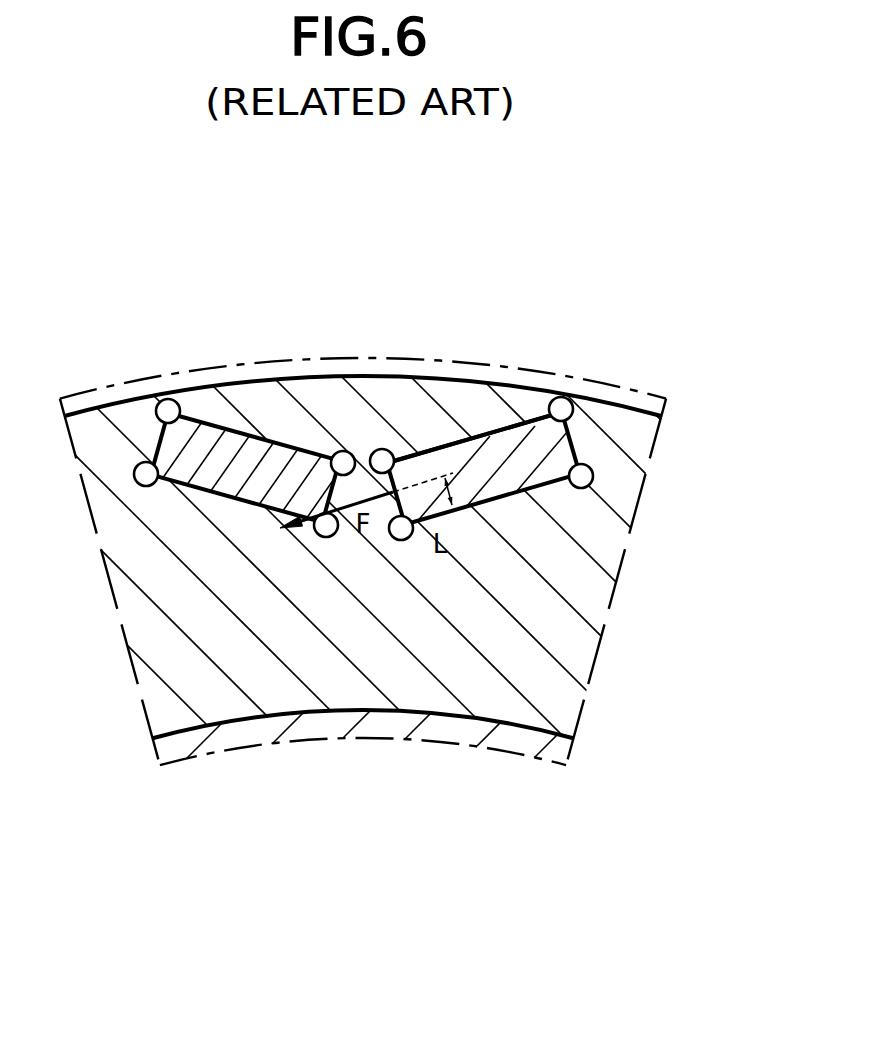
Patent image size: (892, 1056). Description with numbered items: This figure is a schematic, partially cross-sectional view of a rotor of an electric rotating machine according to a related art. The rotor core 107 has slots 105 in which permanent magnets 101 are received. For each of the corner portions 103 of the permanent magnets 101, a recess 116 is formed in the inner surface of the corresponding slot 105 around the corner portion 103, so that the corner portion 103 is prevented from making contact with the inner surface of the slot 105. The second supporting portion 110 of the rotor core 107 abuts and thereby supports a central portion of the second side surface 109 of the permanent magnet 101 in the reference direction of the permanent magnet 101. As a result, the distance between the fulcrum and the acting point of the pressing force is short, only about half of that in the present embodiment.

The permanent magnet 101 is at (447, 460).
The corner portion 103 is at (565, 398).
The slot 105 is at (505, 428).
The rotor core 107 is at (552, 700).
The second side surface 109 is at (360, 467).
The second supporting portion 110 is at (523, 492).
The recess 116 is at (590, 482).